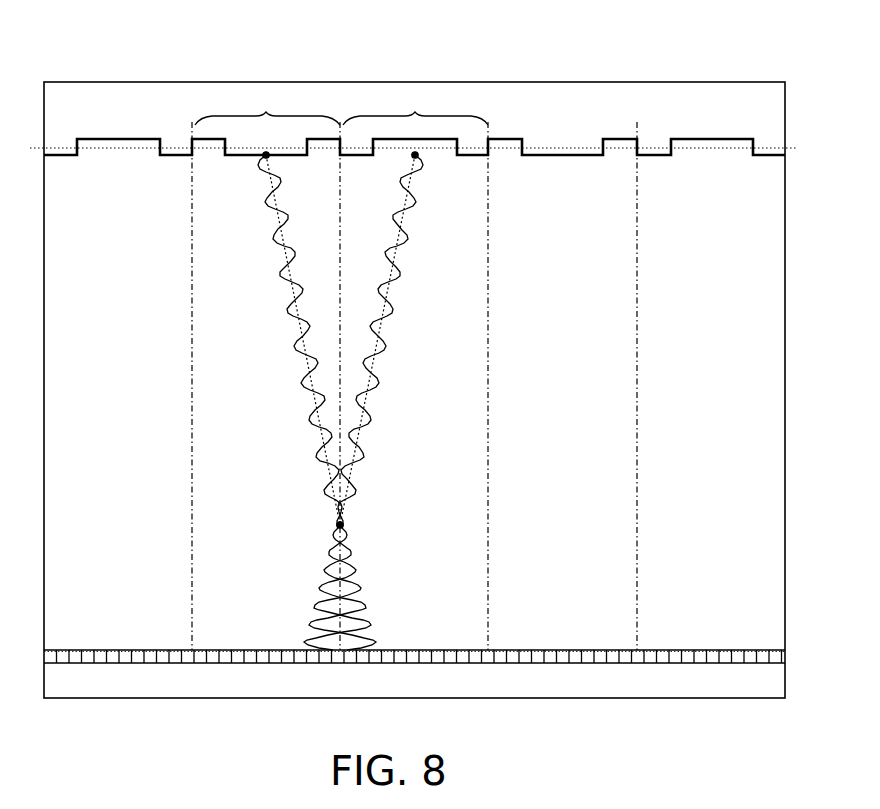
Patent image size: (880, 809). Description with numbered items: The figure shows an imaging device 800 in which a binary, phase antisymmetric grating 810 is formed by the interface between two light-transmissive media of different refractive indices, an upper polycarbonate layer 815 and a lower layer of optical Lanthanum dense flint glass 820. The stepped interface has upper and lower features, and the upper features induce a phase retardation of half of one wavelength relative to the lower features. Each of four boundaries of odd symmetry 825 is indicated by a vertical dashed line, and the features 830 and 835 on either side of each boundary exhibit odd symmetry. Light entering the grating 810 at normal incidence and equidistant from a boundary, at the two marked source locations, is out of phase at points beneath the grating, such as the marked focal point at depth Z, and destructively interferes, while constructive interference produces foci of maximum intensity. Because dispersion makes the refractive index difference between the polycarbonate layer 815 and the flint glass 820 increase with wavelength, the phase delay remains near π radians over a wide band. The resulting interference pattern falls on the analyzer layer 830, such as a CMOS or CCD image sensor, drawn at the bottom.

The imaging device 800 is at (226, 50).
The binary phase antisymmetric grating 810 is at (690, 139).
The polycarbonate layer 815 is at (127, 113).
The Lanthanum dense flint glass layer 820 is at (576, 350).
The boundary of odd symmetry 825 is at (345, 157).
The feature / analyzer layer 830 is at (464, 696).
The feature 835 is at (487, 372).